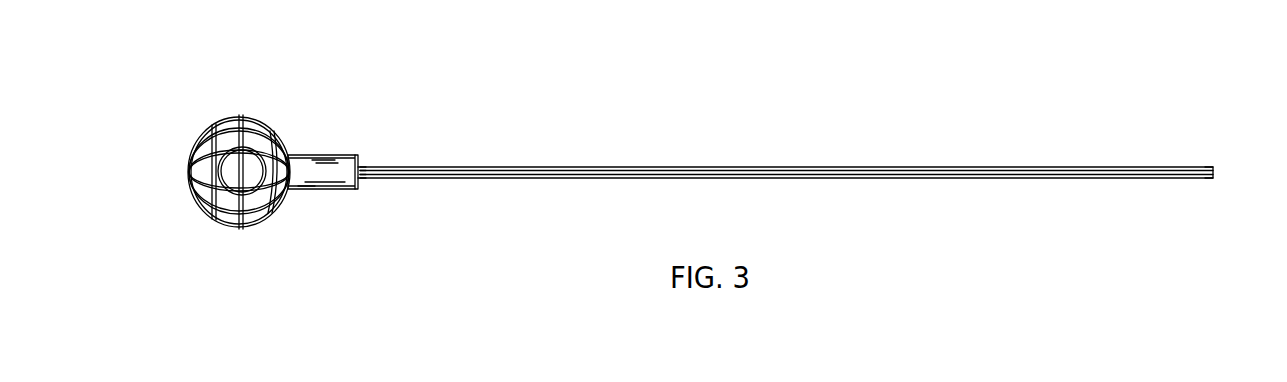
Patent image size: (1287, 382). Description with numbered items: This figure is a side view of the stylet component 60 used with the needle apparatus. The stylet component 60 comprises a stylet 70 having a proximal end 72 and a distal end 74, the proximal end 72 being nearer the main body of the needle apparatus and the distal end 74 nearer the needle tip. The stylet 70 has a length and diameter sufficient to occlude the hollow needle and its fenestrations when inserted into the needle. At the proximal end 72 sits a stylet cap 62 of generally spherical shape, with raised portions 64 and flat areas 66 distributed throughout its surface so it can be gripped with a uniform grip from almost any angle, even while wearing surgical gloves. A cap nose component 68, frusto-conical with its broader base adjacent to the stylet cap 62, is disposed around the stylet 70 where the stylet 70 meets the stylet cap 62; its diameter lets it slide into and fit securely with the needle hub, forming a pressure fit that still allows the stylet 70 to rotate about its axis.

The stylet component 60 is at (870, 122).
The stylet cap 62 is at (230, 100).
The raised portions 64 is at (279, 130).
The flat areas 66 is at (253, 137).
The cap nose component 68 is at (322, 172).
The stylet 70 is at (965, 179).
The proximal end 72 is at (364, 166).
The distal end 74 is at (1214, 172).